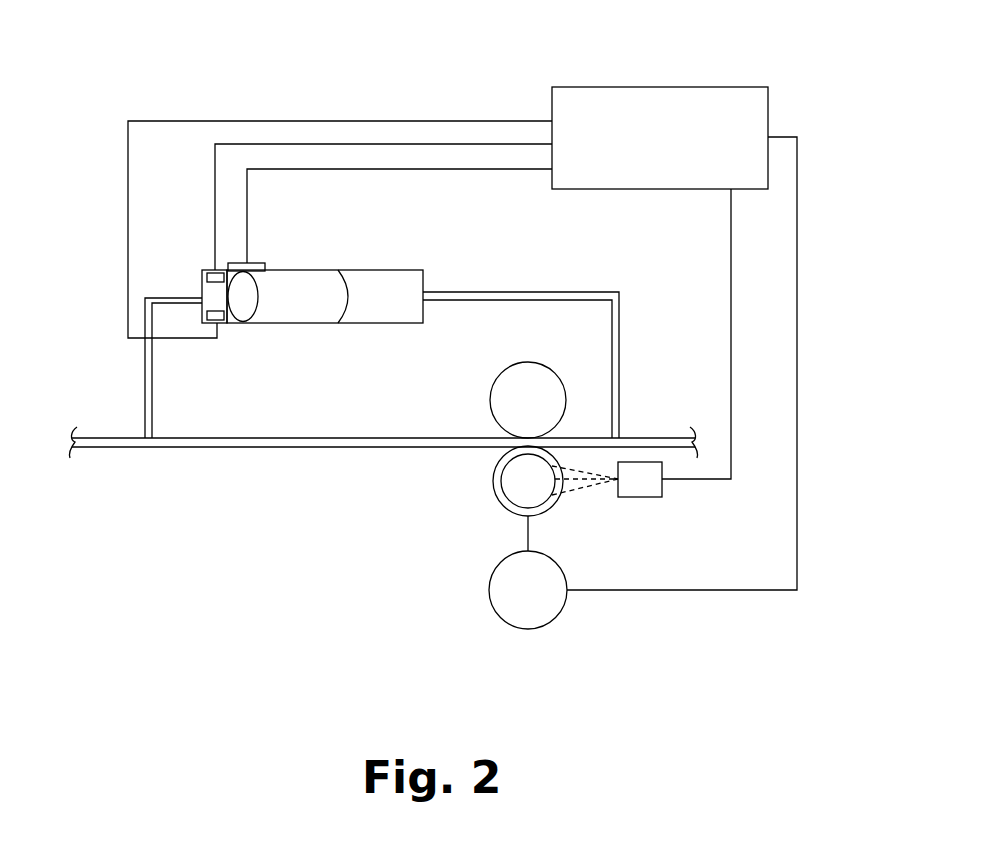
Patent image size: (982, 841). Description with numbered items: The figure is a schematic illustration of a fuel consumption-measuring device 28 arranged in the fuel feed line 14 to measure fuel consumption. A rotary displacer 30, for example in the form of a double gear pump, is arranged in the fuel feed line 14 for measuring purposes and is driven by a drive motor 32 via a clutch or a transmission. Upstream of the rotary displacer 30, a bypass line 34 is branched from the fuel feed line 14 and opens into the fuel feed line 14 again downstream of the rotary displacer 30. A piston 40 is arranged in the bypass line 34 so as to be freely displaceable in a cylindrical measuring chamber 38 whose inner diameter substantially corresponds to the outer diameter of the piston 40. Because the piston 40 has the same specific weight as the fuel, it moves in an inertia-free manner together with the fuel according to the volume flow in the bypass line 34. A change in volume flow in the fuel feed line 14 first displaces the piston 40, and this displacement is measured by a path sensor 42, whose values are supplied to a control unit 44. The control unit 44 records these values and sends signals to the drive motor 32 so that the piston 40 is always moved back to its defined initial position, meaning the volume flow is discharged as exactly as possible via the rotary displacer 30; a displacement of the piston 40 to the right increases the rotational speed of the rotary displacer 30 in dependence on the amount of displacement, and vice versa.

The fuel feed line 14 is at (90, 438).
The fuel consumption-measuring device 28 is at (384, 88).
The rotary displacer 30 is at (500, 510).
The drive motor 32 is at (500, 605).
The bypass line 34 is at (614, 341).
The measuring chamber 38 is at (213, 292).
The piston 40 is at (297, 307).
The path sensor 42 is at (258, 263).
The control unit 44 is at (587, 98).